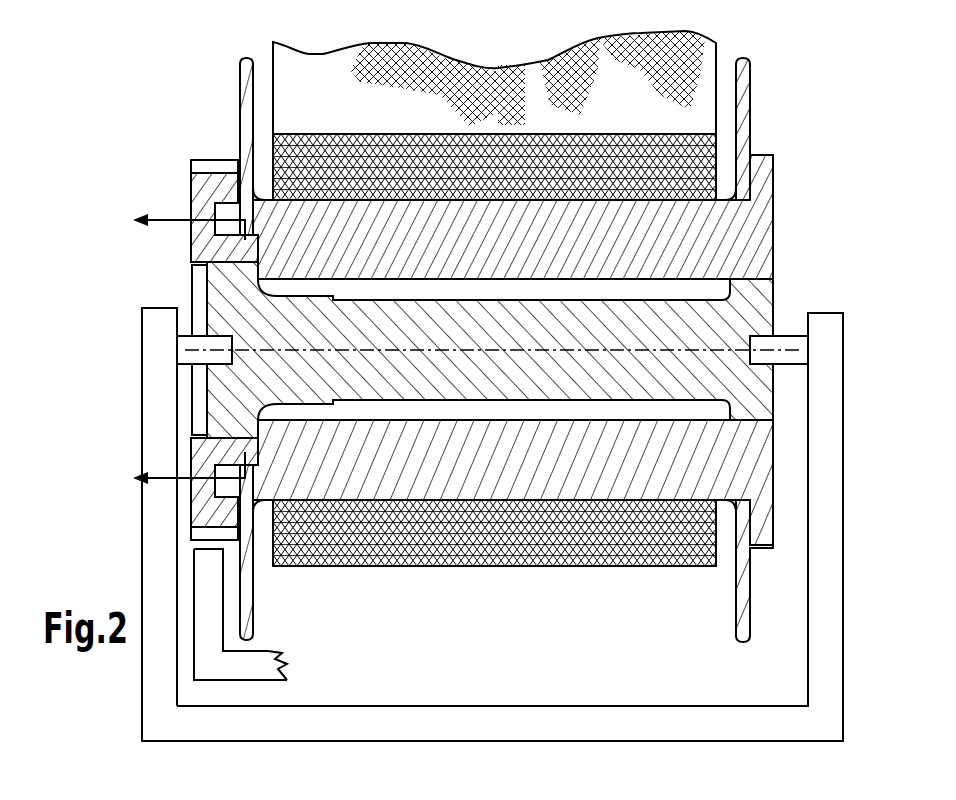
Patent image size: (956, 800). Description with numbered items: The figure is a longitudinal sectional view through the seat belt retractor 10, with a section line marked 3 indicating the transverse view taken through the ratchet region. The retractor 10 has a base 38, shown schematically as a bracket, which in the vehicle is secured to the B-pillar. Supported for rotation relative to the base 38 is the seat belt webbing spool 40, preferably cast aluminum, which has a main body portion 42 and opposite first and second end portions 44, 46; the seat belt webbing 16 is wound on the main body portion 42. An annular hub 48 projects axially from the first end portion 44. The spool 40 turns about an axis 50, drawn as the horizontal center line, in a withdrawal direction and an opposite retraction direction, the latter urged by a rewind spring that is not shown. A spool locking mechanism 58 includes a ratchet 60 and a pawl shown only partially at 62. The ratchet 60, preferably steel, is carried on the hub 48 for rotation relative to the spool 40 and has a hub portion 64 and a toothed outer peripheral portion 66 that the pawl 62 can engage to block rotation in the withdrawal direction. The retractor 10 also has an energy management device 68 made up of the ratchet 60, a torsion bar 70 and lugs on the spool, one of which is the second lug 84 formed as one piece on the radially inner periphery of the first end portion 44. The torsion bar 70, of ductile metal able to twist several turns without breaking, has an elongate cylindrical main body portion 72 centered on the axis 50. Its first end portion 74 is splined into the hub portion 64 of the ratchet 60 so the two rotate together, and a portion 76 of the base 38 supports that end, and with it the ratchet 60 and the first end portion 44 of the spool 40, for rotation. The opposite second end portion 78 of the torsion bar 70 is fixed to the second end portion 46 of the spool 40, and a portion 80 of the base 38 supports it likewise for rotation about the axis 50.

The seat belt retractor 10 is at (104, 693).
The seat belt webbing 16 is at (604, 575).
The base 38 is at (855, 597).
The seat belt webbing spool 40 is at (786, 159).
The main body portion 42 is at (437, 476).
The first end portion 44 is at (318, 225).
The second end portion 46 is at (748, 247).
The annular hub 48 is at (213, 207).
The axis 50 is at (776, 332).
The spool locking mechanism 58 is at (176, 550).
The ratchet 60 is at (178, 505).
The pawl 62 is at (278, 646).
The hub portion 64 is at (227, 271).
The toothed outer peripheral portion 66 is at (212, 158).
The energy management device 68 is at (132, 401).
The torsion bar 70 is at (788, 393).
The elongate cylindrical main body portion 72 is at (507, 383).
The first end portion 74 is at (218, 294).
The portion of the base 76 is at (142, 351).
The second end portion 78 is at (752, 413).
The portion of the base 80 is at (843, 535).
The second lug 84 is at (240, 440).
The section line of FIG. 3 is at (179, 350).